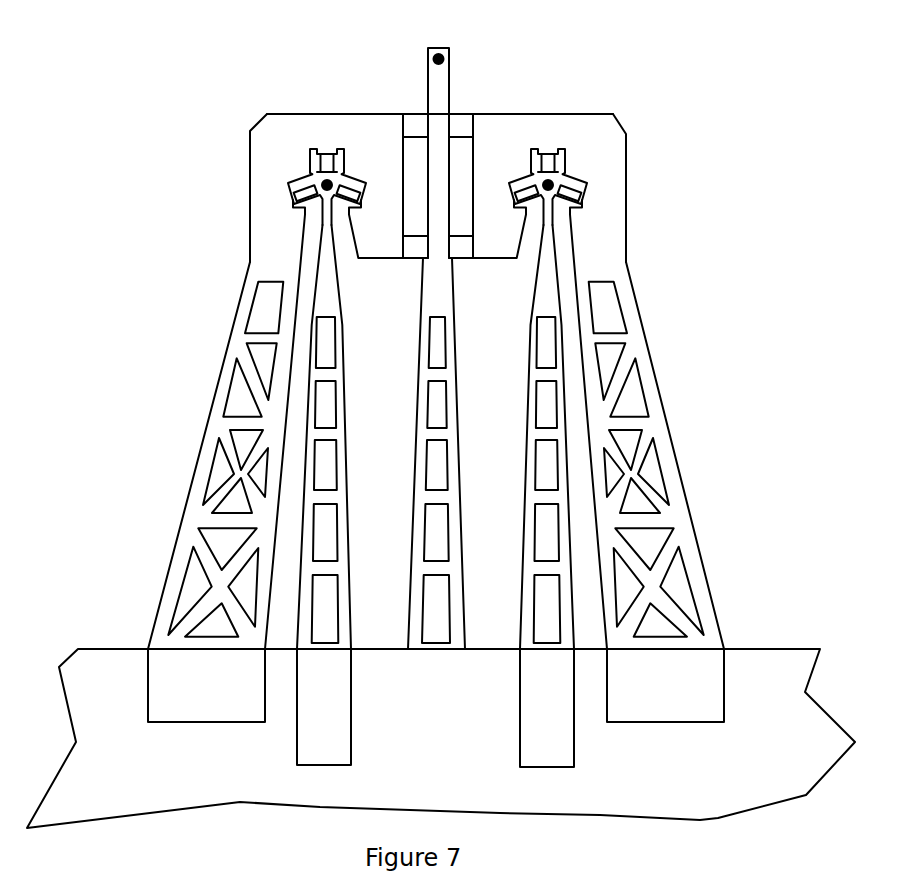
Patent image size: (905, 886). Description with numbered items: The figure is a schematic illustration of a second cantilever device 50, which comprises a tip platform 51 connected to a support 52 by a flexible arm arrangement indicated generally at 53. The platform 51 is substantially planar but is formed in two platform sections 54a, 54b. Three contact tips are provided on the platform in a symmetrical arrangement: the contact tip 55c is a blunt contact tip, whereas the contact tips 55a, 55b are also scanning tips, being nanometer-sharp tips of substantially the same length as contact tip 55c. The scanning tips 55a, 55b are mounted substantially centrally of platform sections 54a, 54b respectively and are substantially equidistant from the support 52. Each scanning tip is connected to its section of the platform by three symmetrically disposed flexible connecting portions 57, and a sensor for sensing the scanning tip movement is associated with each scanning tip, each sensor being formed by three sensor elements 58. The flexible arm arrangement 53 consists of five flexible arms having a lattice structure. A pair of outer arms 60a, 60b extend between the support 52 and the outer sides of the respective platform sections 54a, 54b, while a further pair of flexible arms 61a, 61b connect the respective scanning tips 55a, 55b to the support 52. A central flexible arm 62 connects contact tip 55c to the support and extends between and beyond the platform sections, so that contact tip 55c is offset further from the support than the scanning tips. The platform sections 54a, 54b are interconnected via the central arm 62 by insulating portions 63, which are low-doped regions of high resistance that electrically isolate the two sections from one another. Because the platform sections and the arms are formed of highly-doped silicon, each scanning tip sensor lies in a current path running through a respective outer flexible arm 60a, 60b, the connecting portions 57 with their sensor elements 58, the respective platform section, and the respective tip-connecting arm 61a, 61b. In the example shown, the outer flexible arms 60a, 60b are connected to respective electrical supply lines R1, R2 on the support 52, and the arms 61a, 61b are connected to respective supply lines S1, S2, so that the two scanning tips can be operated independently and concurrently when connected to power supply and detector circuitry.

The cantilever device 50 is at (145, 97).
The tip platform 51 is at (258, 120).
The support 52 is at (78, 650).
The flexible arm arrangement 53 is at (158, 405).
The platform section 54a is at (338, 112).
The platform section 54b is at (549, 112).
The scanning tip 55a is at (321, 175).
The scanning tip 55b is at (558, 181).
The contact tip 55c is at (438, 47).
The flexible connecting portions 57 is at (292, 197).
The sensor elements 58 is at (292, 183).
The outer flexible arm 60a is at (197, 467).
The outer flexible arm 60b is at (677, 468).
The flexible arm 61a is at (344, 417).
The flexible arm 61b is at (529, 420).
The central flexible arm 62 is at (412, 513).
The insulating portions 63 is at (417, 114).
The electrical supply line R1 is at (202, 685).
The electrical supply line S1 is at (322, 745).
The electrical supply line S2 is at (545, 745).
The electrical supply line R2 is at (663, 685).